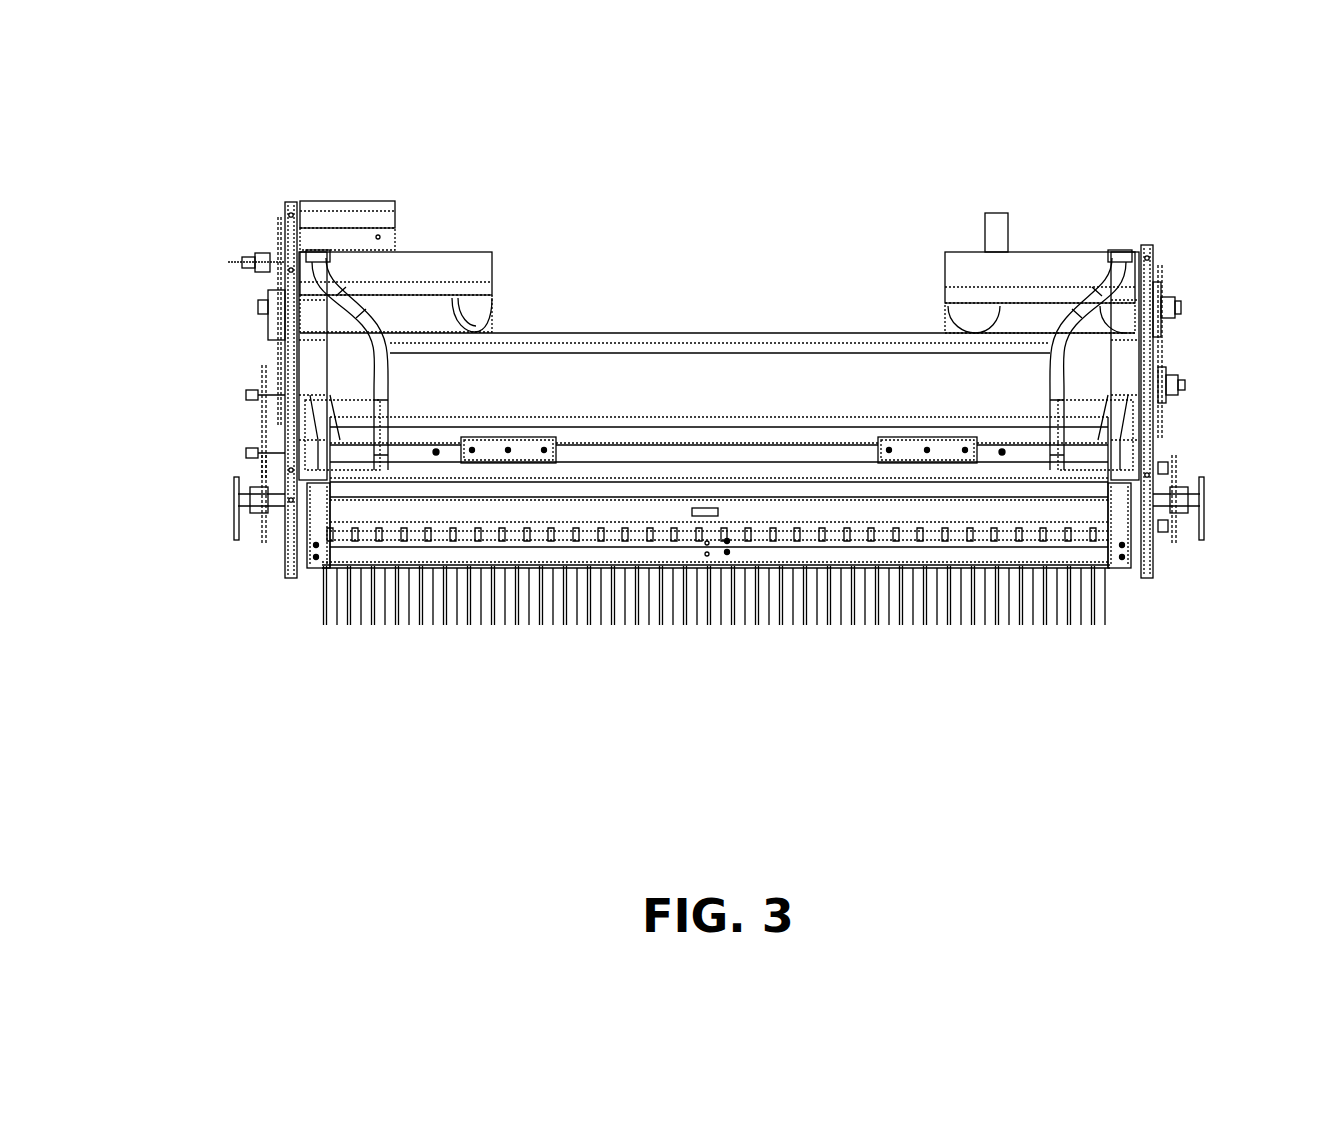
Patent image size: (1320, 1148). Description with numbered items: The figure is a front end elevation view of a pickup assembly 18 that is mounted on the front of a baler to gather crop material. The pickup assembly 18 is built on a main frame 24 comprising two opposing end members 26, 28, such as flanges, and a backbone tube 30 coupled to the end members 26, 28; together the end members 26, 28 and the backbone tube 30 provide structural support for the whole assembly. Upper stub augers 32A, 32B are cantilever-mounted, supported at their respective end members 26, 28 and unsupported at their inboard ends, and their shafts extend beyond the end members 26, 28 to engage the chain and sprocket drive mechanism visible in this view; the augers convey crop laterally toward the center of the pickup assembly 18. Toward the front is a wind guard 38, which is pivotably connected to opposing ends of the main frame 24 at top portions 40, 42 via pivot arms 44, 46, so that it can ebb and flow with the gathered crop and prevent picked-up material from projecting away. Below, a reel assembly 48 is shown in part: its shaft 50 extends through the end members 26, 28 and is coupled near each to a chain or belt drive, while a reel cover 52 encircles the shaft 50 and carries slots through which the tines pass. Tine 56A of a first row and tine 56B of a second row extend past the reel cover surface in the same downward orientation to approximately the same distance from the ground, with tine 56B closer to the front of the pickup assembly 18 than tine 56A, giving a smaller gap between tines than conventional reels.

The pickup assembly 18 is at (898, 136).
The main frame 24 is at (289, 204).
The end member 26 is at (290, 358).
The end member 28 is at (1152, 348).
The backbone tube 30 is at (1188, 535).
The upper stub auger 32A is at (476, 303).
The upper stub auger 32B is at (1176, 302).
The wind guard 38 is at (1088, 510).
The top portion 40 is at (355, 267).
The top portion 42 is at (1091, 265).
The pivot arm 44 is at (367, 318).
The pivot arm 46 is at (1075, 318).
The reel assembly 48 is at (208, 461).
The shaft 50 is at (303, 498).
The reel cover 52 is at (333, 552).
The tine 56A is at (1093, 620).
The tine 56B is at (1105, 610).